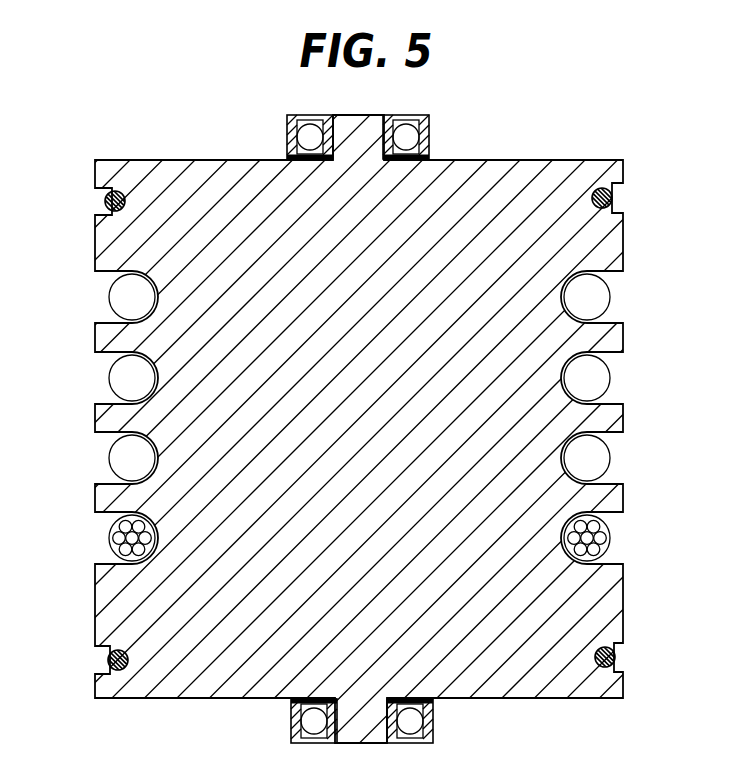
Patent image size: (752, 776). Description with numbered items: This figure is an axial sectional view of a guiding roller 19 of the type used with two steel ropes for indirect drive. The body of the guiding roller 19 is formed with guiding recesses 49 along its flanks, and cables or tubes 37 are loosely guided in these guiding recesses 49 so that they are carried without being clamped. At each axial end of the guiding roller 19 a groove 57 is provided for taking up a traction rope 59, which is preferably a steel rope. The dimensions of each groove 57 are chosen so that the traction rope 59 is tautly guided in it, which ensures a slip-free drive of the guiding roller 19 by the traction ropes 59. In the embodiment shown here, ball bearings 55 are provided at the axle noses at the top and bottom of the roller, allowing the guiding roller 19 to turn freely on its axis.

The guiding roller 19 is at (571, 175).
The cables or tubes 37 is at (115, 297).
The guiding recesses 49 is at (585, 303).
The ball bearings 55 is at (430, 120).
The groove 57 is at (612, 204).
The traction rope 59 is at (104, 204).